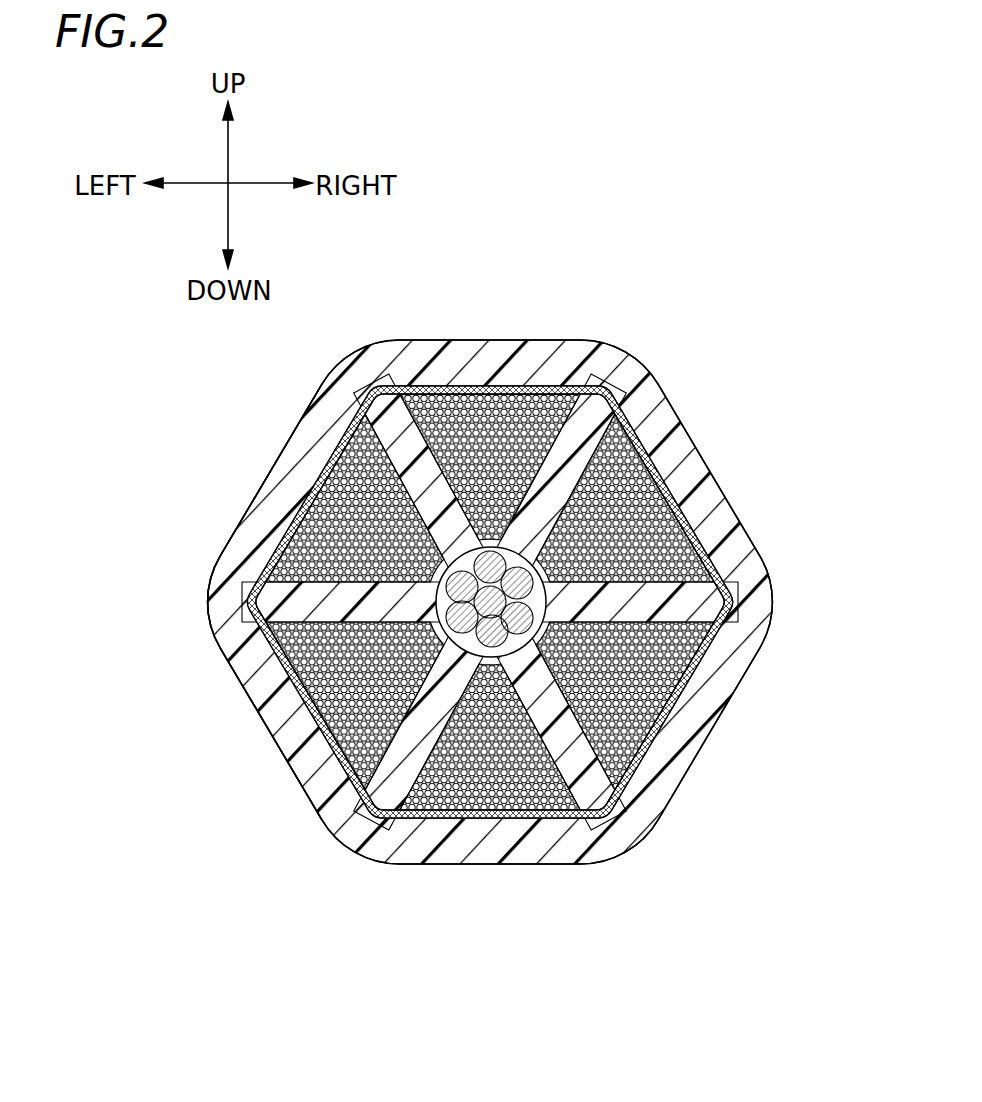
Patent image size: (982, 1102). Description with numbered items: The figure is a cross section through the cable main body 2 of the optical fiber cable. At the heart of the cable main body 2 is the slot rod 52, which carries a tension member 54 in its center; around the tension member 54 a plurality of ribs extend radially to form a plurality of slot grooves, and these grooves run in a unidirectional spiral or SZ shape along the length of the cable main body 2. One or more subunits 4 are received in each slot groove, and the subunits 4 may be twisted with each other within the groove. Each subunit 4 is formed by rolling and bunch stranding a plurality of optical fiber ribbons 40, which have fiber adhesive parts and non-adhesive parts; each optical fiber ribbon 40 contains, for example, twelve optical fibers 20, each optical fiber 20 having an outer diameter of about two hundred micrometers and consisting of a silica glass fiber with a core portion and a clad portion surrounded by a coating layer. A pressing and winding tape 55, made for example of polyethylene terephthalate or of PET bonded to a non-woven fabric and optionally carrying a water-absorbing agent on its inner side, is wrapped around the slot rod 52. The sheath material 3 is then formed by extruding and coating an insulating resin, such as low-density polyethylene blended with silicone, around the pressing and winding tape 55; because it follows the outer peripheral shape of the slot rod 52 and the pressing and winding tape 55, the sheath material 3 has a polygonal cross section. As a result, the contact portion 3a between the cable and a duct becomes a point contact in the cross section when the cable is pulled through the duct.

The cable main body 2 is at (772, 640).
The sheath material 3 is at (735, 535).
The contact portion 3a is at (212, 600).
The subunit 4 is at (588, 405).
The optical fiber 20 is at (634, 453).
The optical fiber ribbon 40 is at (658, 490).
The slot rod 52 is at (395, 443).
The tension member 54 is at (355, 705).
The pressing and winding tape 55 is at (483, 818).